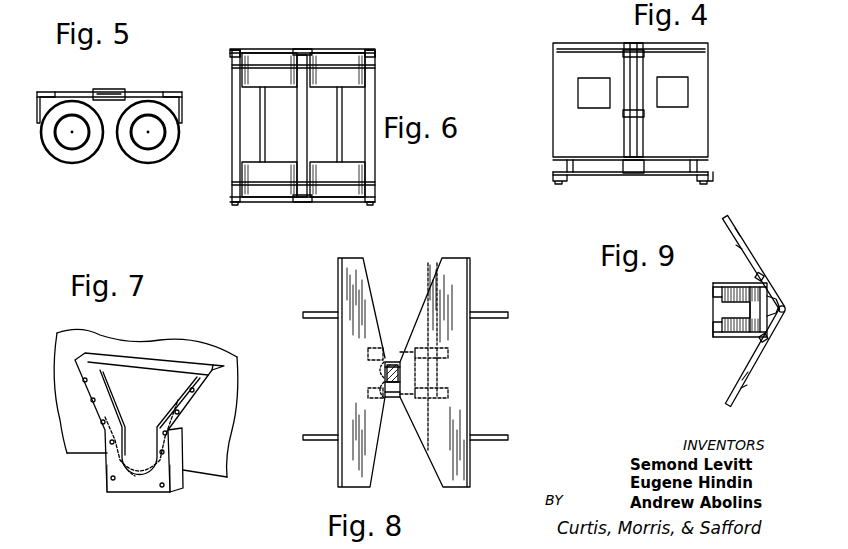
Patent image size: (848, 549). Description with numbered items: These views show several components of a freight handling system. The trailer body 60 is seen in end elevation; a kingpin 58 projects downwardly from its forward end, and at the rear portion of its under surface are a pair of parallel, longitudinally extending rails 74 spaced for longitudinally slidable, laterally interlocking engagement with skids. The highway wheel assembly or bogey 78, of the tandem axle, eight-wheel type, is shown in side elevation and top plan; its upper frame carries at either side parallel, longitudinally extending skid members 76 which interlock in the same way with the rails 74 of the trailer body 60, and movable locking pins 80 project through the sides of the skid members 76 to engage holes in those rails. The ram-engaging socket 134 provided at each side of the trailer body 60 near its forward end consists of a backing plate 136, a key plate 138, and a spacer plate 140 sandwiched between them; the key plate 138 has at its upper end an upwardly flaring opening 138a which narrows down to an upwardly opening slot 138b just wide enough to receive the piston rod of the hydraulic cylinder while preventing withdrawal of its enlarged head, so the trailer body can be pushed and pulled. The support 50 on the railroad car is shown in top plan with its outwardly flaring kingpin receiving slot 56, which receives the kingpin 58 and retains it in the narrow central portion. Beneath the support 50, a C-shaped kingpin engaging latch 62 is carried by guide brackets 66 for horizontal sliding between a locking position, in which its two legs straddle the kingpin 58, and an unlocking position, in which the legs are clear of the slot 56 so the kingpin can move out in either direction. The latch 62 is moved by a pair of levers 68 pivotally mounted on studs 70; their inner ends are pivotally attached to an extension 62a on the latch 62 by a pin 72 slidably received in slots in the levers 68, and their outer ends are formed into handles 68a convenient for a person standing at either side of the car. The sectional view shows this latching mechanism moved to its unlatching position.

In FIG. 8, the support 50 is at (452, 250).
In FIG. 8, the kingpin receiving slot 56 is at (423, 303).
In FIG. 4, the kingpin 58 is at (633, 178).
In FIG. 8, the kingpin 58 is at (384, 374).
In FIG. 4, the trailer body 60 is at (710, 103).
In FIG. 9, the kingpin engaging latch 62 is at (713, 310).
In FIG. 8, the kingpin engaging latch 62 is at (395, 358).
In FIG. 9, the extension 62a is at (776, 303).
In FIG. 8, the guide bracket 66 is at (368, 352).
In FIG. 9, the lever 68 is at (748, 242).
In FIG. 9, the handle 68a is at (730, 220).
In FIG. 9, the stud 70 is at (763, 277).
In FIG. 9, the pin 72 is at (786, 311).
In FIG. 4, the rail 74 is at (553, 180).
In FIG. 5, the skid member 76 is at (137, 92).
In FIG. 6, the skid member 76 is at (275, 49).
In FIG. 5, the bogey 78 is at (48, 88).
In FIG. 6, the bogey 78 is at (344, 44).
In FIG. 5, the locking pin 80 is at (42, 94).
In FIG. 6, the locking pin 80 is at (232, 50).
In FIG. 7, the socket 134 is at (166, 359).
In FIG. 7, the backing plate 136 is at (118, 358).
In FIG. 7, the key plate 138 is at (152, 489).
In FIG. 7, the upwardly flaring opening 138a is at (168, 403).
In FIG. 7, the upwardly opening slot 138b is at (127, 442).
In FIG. 7, the spacer plate 140 is at (182, 477).